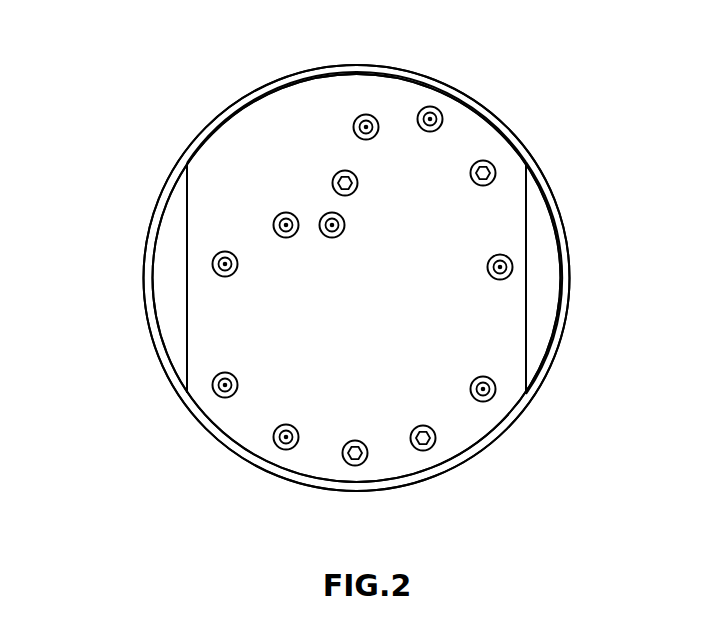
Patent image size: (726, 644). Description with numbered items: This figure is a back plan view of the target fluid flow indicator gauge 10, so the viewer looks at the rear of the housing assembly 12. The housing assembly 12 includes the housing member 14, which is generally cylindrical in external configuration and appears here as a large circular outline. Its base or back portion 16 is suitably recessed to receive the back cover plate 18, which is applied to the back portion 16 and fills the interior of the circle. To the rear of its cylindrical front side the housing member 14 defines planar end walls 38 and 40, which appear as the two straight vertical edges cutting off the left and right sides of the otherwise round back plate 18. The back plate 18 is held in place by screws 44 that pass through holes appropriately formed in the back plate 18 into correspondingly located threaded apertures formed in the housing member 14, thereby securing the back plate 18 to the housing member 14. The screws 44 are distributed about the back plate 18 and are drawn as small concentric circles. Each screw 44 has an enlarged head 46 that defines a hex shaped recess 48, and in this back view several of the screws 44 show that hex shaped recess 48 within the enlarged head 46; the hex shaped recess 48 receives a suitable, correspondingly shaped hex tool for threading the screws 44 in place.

The target fluid flow indicator gauge 10 is at (542, 146).
The housing assembly 12 is at (507, 121).
The housing member 14 is at (542, 293).
The back portion 16 is at (532, 202).
The back cover plate 18 is at (395, 107).
The planar end wall 38 is at (188, 203).
The planar end wall 40 is at (527, 228).
The screws 44 is at (445, 103).
The enlarged head 46 is at (225, 251).
The hex shaped recess 48 is at (495, 277).